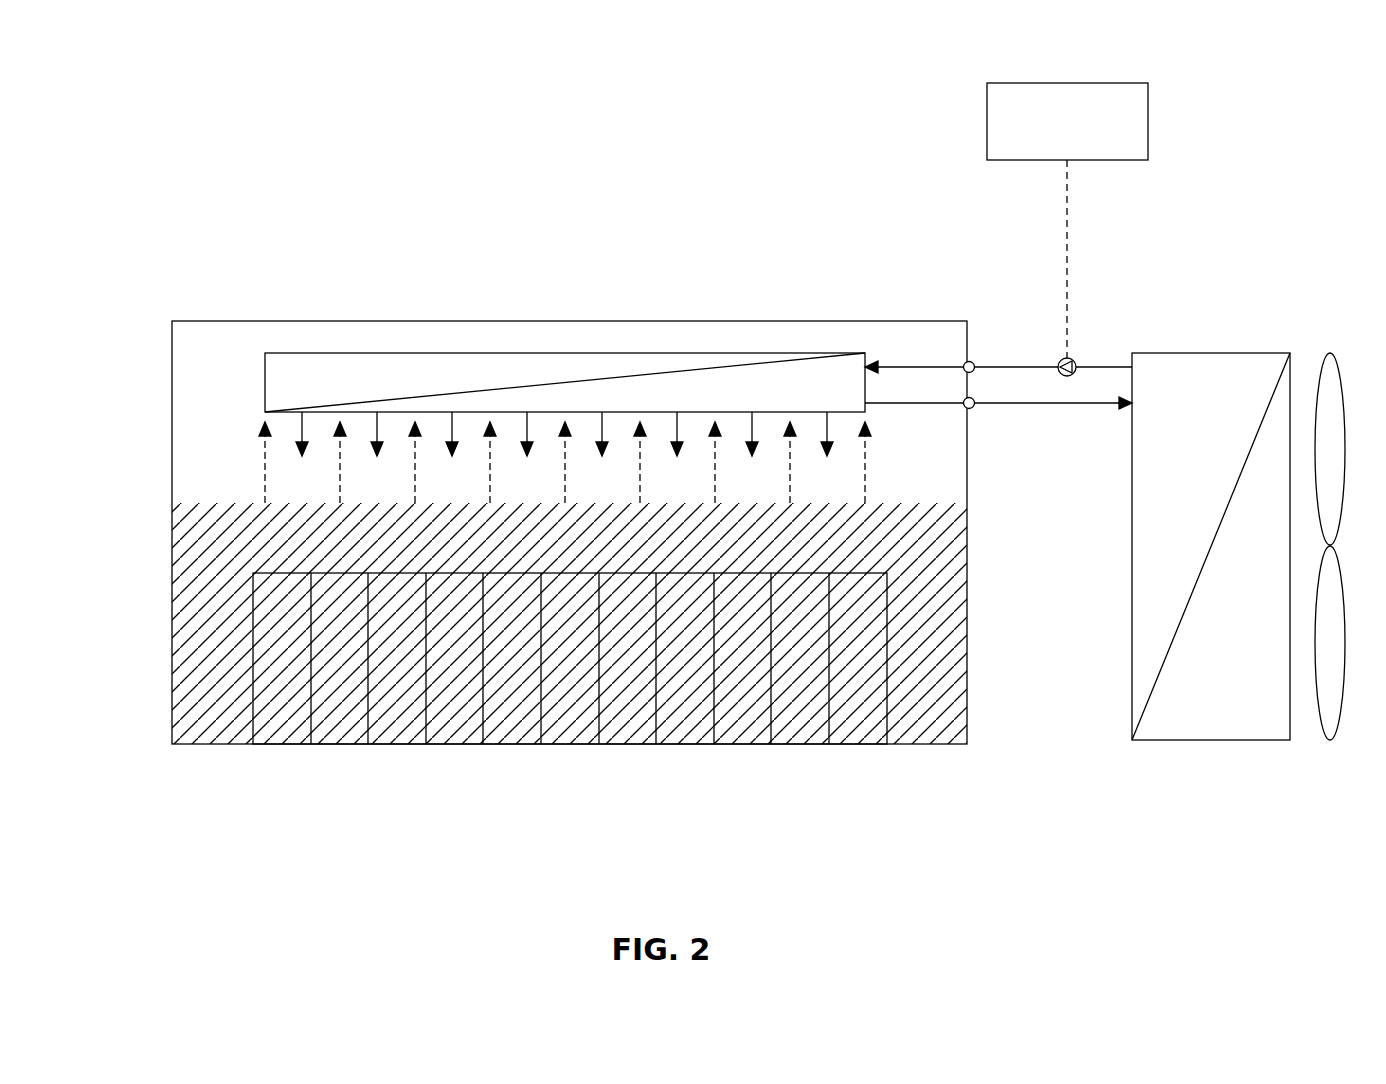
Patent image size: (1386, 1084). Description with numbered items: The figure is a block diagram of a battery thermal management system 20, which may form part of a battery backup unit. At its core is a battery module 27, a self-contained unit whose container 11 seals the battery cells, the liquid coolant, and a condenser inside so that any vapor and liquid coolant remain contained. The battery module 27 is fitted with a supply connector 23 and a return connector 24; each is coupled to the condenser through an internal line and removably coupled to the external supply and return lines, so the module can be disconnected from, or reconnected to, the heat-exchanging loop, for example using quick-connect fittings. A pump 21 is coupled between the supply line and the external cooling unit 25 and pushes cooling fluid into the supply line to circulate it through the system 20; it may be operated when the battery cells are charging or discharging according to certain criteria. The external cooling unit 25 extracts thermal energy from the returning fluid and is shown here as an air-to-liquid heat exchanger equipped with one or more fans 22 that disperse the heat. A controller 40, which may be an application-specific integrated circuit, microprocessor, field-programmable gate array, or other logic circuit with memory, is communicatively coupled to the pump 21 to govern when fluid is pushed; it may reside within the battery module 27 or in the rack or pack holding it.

The battery thermal management system 20 is at (218, 177).
The container 11 is at (220, 744).
The battery module 27 is at (416, 783).
The supply connector 23 is at (965, 363).
The return connector 24 is at (973, 408).
The pump 21 is at (1073, 361).
The controller 40 is at (1067, 220).
The external cooling unit 25 is at (1168, 740).
The fans 22 is at (1338, 323).